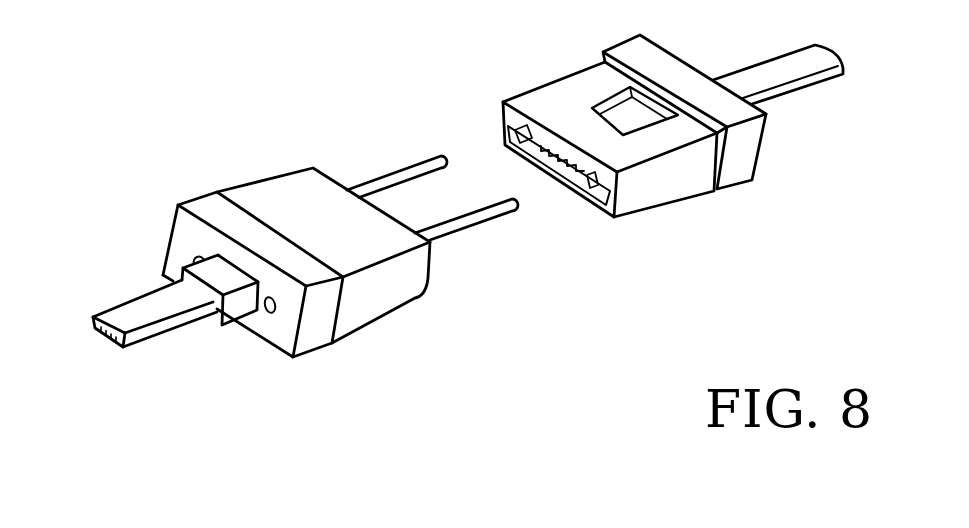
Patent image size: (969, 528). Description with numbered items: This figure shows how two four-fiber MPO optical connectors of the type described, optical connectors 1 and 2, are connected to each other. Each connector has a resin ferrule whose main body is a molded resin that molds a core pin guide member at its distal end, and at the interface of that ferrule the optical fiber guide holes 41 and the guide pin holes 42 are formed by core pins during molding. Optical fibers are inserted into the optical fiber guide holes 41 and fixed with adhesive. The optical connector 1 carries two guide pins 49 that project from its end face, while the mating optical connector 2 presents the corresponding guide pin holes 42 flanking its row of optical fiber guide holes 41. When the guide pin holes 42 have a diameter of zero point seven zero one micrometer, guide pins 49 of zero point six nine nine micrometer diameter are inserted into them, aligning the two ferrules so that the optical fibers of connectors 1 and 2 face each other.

The optical connector 1 is at (305, 262).
The optical connector 2 is at (673, 165).
The optical fiber guide holes 41 is at (545, 148).
The guide pin holes 42 is at (593, 231).
The guide pins 49 is at (482, 224).